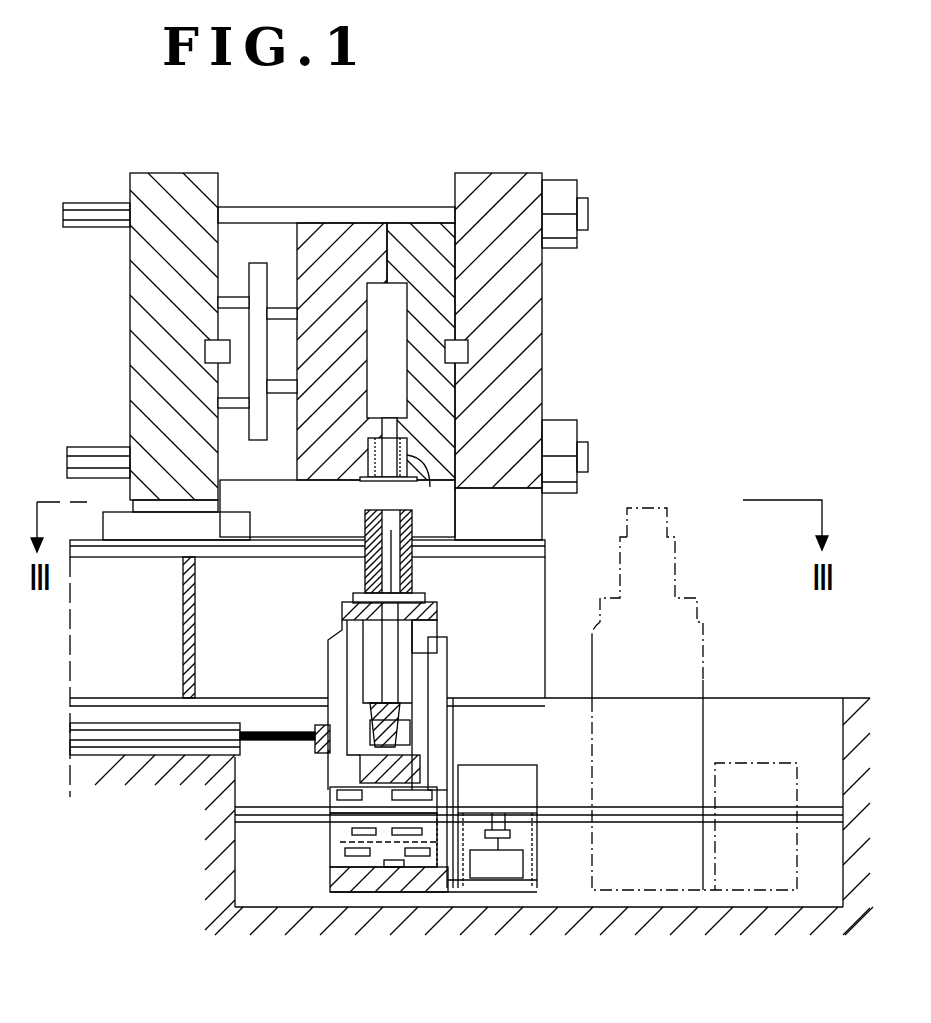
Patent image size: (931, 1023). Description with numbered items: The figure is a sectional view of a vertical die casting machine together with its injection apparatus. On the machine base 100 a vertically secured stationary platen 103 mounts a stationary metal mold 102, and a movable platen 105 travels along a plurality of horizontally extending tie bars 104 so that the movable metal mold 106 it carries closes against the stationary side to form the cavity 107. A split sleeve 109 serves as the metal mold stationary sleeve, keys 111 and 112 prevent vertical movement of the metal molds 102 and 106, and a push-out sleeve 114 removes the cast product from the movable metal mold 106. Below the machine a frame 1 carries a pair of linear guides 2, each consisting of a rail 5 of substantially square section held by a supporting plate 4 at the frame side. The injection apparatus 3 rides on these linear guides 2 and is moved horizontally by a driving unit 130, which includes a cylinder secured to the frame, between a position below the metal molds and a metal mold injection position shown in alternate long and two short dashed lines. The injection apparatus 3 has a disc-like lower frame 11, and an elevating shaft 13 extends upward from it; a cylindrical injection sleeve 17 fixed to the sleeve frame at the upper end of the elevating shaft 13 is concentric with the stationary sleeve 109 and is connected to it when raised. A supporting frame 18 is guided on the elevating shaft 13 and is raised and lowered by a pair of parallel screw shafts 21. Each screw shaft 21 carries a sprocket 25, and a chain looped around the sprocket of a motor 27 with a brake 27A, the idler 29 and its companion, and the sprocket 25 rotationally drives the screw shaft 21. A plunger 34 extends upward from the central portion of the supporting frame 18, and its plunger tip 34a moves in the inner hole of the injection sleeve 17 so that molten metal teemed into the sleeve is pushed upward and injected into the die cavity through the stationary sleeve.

The frame 1 is at (240, 800).
The linear guide 2 is at (555, 830).
The injection apparatus 3 is at (328, 615).
The supporting plate 4 is at (648, 824).
The rail 5 is at (630, 810).
The lower frame 11 is at (363, 892).
The elevating shaft 13 is at (440, 735).
The injection sleeve 17 is at (365, 516).
The supporting frame 18 is at (322, 778).
The screw shaft 21 is at (345, 672).
The sprocket 25 is at (330, 840).
The motor 27 is at (500, 775).
The brake 27A is at (497, 878).
The idler 29 is at (420, 870).
The plunger 34 is at (395, 690).
The plunger tip 34a is at (420, 596).
The machine base 100 is at (112, 617).
The stationary metal mold 102 is at (410, 228).
The stationary platen 103 is at (500, 173).
The tie bar 104 is at (88, 210).
The movable platen 105 is at (170, 173).
The movable metal mold 106 is at (335, 225).
The cavity 107 is at (400, 318).
The split sleeve 109 is at (420, 470).
The key 111 is at (468, 352).
The key 112 is at (205, 351).
The push-out sleeve 114 is at (283, 310).
The driving unit 130 is at (130, 735).